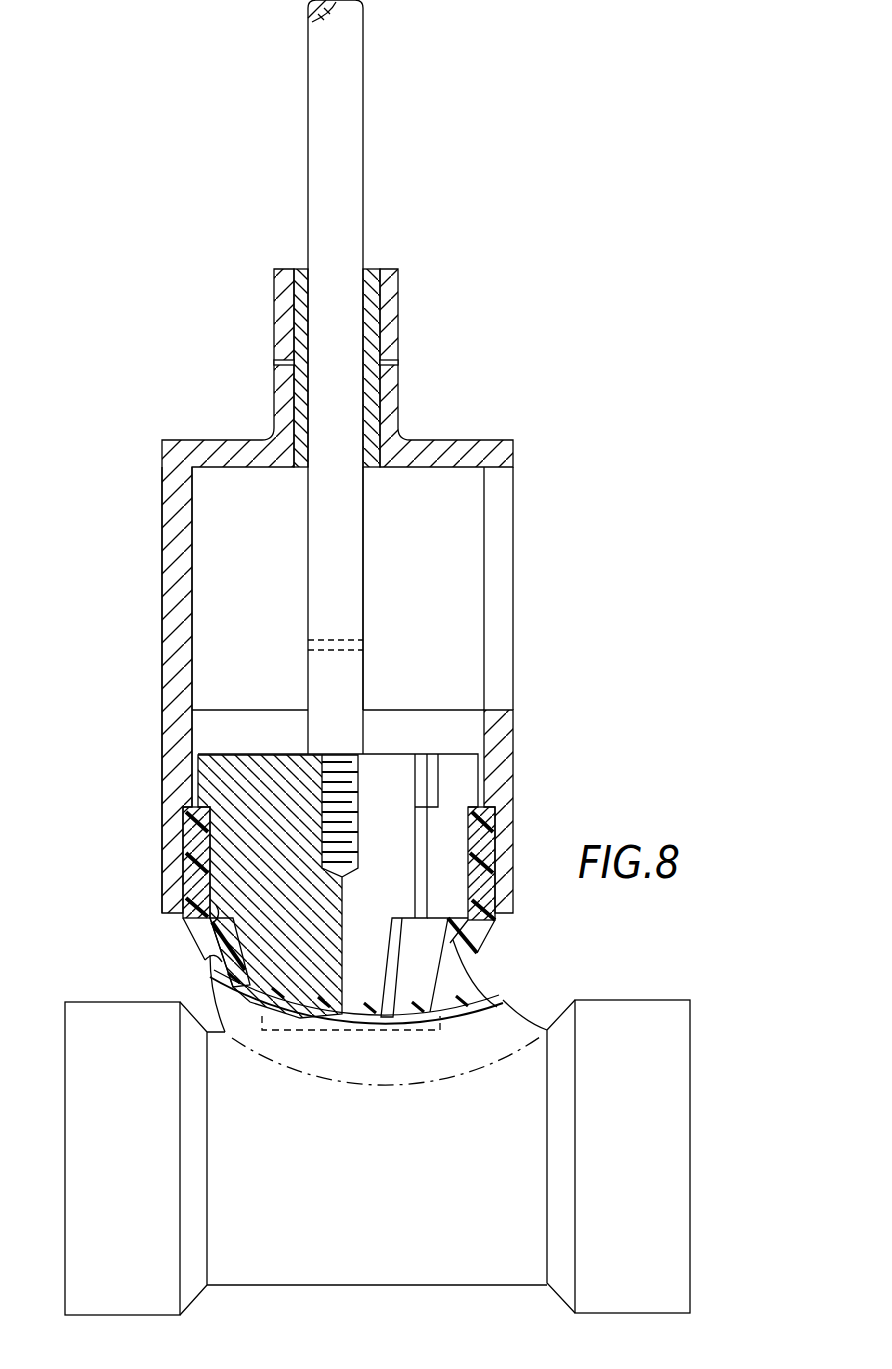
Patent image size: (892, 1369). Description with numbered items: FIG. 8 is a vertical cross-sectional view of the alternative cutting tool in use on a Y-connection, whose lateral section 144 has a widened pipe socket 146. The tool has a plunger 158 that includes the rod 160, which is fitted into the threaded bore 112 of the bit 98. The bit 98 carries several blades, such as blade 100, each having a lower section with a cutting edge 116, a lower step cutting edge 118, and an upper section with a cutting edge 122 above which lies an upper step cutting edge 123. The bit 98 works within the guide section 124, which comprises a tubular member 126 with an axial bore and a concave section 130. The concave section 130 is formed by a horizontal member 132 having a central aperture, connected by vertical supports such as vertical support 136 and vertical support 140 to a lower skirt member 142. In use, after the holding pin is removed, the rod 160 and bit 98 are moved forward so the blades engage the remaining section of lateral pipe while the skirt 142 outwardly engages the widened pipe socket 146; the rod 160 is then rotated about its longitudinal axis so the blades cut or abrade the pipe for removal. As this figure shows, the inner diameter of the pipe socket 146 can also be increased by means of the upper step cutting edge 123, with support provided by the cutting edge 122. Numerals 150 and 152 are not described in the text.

The bit 98 is at (304, 849).
The blade 100 is at (198, 758).
The threaded bore 112 is at (360, 792).
The cutting edge 116 is at (215, 977).
The lower step cutting edge 118 is at (213, 935).
The cutting edge 122 is at (185, 897).
The upper step cutting edge 123 is at (185, 815).
The guide section 124 is at (331, 586).
The tubular member 126 is at (274, 290).
The concave section 130 is at (141, 711).
The horizontal member 132 is at (162, 440).
The vertical support 136 is at (250, 406).
The vertical support 140 is at (513, 532).
The lower skirt member 142 is at (513, 744).
The lateral section 144 is at (208, 960).
The widened pipe socket 146 is at (185, 870).
The valve stem assembly 150 is at (314, 377).
The stem rod 152 is at (363, 72).
The plunger 158 is at (390, 731).
The rod 160 is at (366, 545).